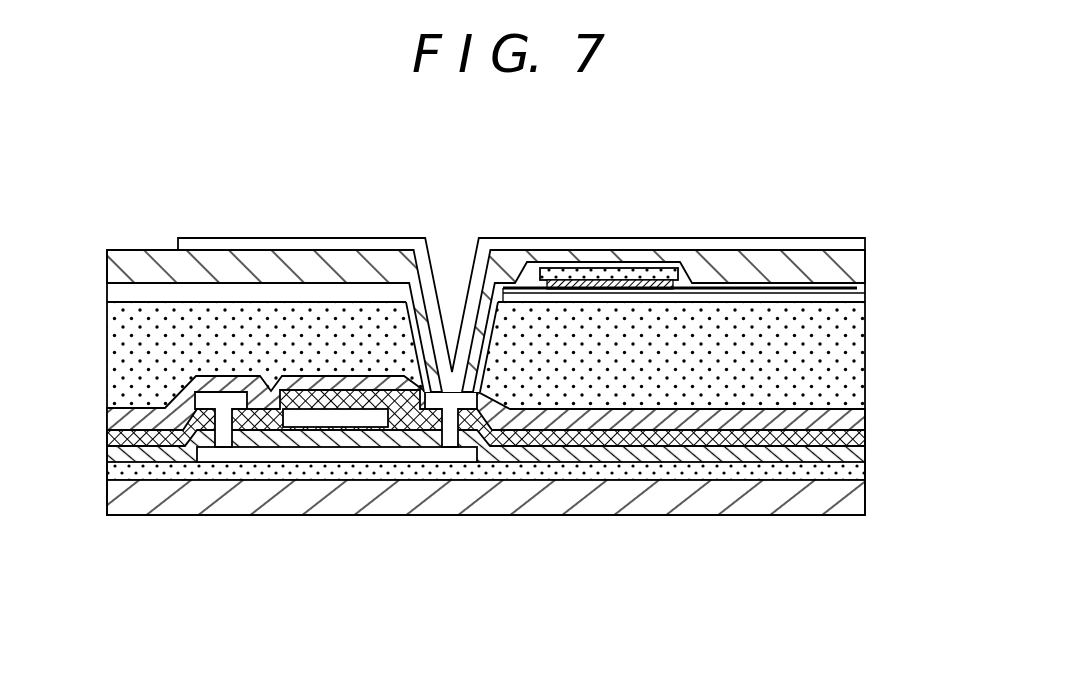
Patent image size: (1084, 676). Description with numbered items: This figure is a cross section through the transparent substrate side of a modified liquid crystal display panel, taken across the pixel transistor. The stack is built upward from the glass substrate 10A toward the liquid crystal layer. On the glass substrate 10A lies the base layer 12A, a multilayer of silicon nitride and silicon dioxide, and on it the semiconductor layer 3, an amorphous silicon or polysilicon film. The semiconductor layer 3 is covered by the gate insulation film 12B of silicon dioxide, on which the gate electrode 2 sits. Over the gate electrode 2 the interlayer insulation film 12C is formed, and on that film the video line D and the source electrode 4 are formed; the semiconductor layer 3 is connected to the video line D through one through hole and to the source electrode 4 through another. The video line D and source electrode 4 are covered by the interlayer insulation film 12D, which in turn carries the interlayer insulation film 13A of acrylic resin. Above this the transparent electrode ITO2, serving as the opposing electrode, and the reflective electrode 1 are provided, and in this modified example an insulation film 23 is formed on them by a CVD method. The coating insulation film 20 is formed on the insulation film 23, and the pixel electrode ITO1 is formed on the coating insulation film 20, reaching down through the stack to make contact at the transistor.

The reflective electrode 1 is at (597, 270).
The pixel electrode ITO1 is at (787, 244).
The coating insulation film 20 is at (852, 262).
The insulation film 23 is at (858, 288).
The transparent electrode ITO2 is at (868, 296).
The interlayer insulation film 13A is at (847, 356).
The gate insulation film 12B is at (868, 429).
The interlayer insulation film 12D is at (120, 414).
The interlayer insulation film 12C is at (112, 438).
The base layer 12A is at (868, 462).
The glass substrate 10A is at (868, 498).
The video line D is at (187, 383).
The semiconductor layer 3 is at (291, 456).
The gate electrode 2 is at (338, 422).
The source electrode 4 is at (432, 402).